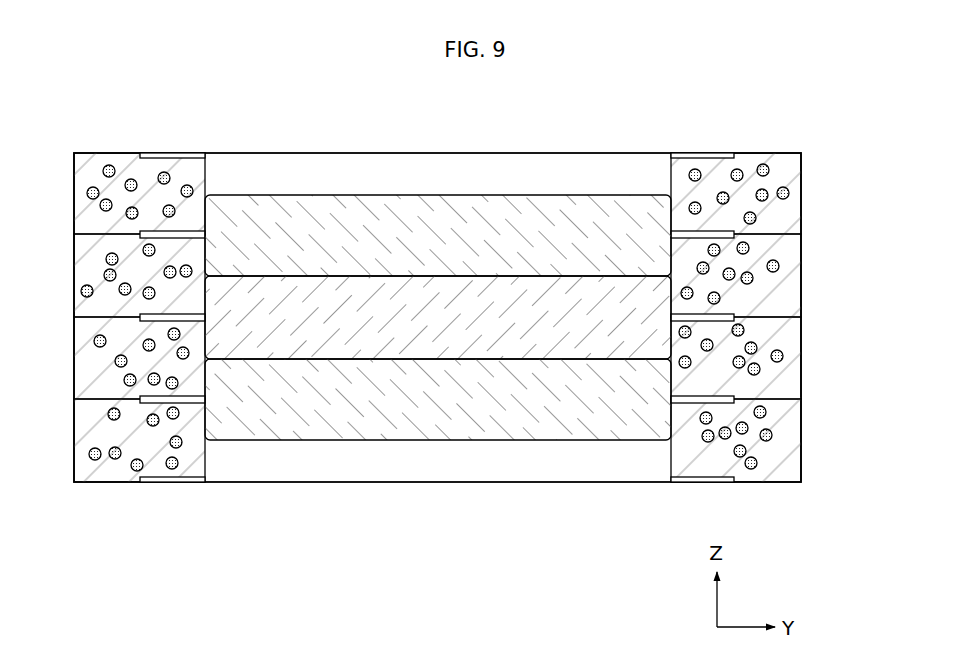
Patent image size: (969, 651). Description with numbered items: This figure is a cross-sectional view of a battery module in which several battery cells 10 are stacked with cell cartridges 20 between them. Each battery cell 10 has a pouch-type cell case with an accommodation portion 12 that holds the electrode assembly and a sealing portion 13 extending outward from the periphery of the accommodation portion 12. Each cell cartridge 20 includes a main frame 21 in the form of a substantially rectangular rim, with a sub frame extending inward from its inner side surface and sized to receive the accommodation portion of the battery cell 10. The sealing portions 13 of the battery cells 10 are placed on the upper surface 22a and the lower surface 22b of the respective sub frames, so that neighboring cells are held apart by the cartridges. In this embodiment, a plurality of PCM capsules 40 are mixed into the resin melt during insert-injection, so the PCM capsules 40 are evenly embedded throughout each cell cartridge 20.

The battery cell 10 is at (428, 172).
The accommodation portion 12 is at (490, 195).
The sealing portion 13 is at (713, 234).
The cell cartridge 20 is at (772, 318).
The main frame 21 is at (773, 153).
The upper surface of the sub frame 22a is at (700, 153).
The lower surface of the sub frame 22b is at (701, 482).
The PCM capsule 40 is at (131, 182).